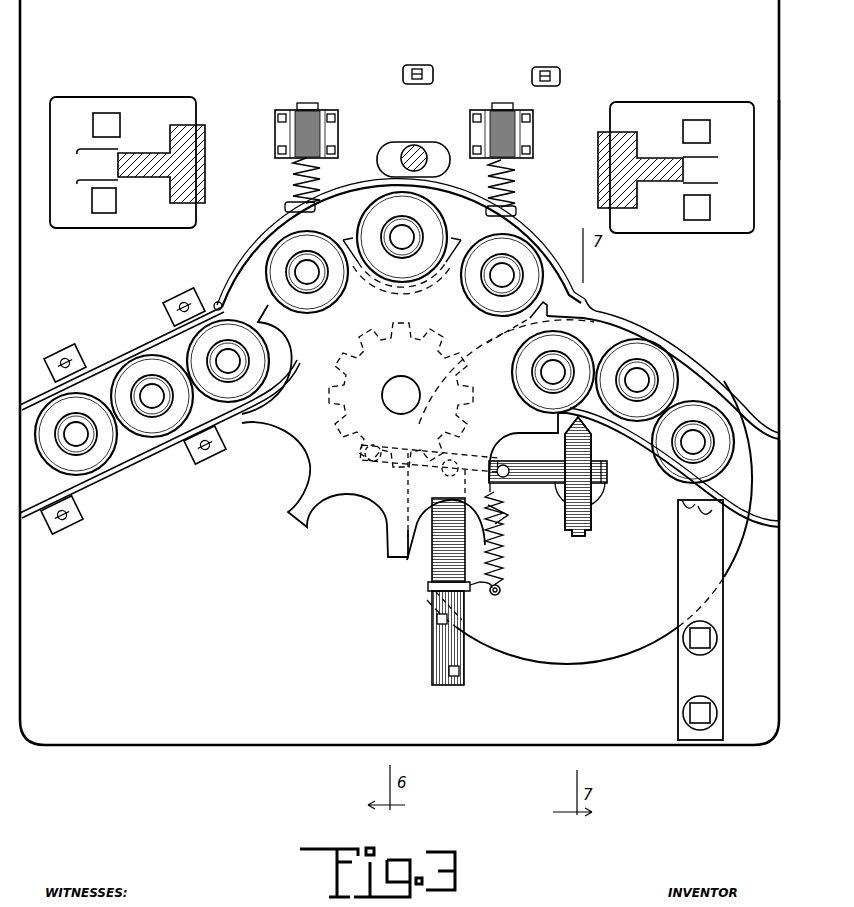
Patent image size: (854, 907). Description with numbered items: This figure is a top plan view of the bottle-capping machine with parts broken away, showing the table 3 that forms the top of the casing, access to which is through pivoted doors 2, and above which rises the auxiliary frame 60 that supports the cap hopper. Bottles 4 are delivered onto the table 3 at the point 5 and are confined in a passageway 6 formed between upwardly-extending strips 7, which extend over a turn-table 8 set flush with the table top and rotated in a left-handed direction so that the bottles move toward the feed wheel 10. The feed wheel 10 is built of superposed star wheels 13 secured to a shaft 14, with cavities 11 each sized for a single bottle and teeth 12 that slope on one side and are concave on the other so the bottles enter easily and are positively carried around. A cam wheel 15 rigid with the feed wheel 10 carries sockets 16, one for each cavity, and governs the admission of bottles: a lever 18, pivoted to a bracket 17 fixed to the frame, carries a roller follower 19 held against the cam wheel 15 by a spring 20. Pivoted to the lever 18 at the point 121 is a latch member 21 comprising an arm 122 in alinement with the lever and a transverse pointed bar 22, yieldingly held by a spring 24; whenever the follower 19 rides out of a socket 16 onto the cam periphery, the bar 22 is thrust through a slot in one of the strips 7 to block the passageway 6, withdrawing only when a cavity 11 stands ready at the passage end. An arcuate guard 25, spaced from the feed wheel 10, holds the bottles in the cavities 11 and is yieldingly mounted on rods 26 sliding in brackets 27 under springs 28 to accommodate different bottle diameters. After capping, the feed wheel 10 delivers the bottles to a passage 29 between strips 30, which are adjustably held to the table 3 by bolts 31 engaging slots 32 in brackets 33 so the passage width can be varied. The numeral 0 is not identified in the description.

The doors 2 is at (292, 372).
The table 3 is at (770, 137).
The bottles 4 is at (670, 346).
The point 5 is at (768, 482).
The passageway 6 is at (760, 440).
The strips 7 is at (748, 530).
The turn-table 8 is at (638, 655).
The boss 0 is at (596, 492).
The feed wheel 10 is at (390, 525).
The cavities 11 is at (426, 547).
The teeth 12 is at (500, 520).
The star wheels 13 is at (312, 448).
The shaft 14 is at (412, 386).
The cam wheel 15 is at (330, 410).
The sockets 16 is at (456, 430).
The bracket 17 is at (440, 642).
The lever 18 is at (413, 447).
The follower 19 is at (372, 456).
The spring 20 is at (500, 572).
The latch member 21 is at (535, 462).
The bar 22 is at (593, 432).
The spring 24 is at (588, 530).
The guard 25 is at (539, 254).
The rods 26 is at (318, 178).
The brackets 27 is at (312, 124).
The springs 28 is at (296, 172).
The passage 29 is at (134, 447).
The strips 30 is at (130, 366).
The bolts 31 is at (186, 296).
The slots 32 is at (60, 352).
The brackets 33 is at (82, 364).
The auxiliary frame 60 is at (200, 141).
The pivot point 121 is at (503, 478).
The arm 122 is at (607, 470).